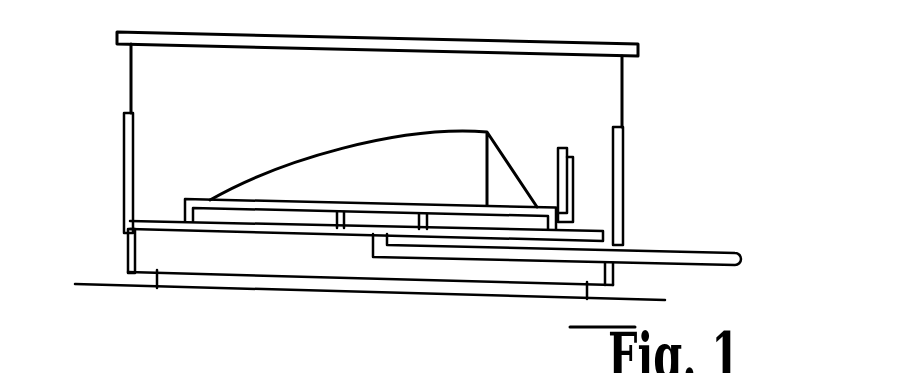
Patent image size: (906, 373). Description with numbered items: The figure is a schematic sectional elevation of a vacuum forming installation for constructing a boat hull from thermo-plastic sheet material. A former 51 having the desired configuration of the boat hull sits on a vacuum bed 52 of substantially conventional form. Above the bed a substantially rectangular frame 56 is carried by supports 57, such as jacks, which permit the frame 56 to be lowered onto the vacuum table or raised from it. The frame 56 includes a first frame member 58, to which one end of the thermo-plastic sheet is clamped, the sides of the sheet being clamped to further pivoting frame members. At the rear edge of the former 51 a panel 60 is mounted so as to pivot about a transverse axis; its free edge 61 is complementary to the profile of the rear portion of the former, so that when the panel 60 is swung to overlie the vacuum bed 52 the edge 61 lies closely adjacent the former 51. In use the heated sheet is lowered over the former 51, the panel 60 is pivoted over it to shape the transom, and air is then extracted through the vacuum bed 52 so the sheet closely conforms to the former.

The former 51 is at (338, 147).
The vacuum bed 52 is at (233, 213).
The frame 56 is at (597, 56).
The supports 57 is at (124, 160).
The first frame member 58 is at (408, 297).
The panel 60 is at (574, 176).
The edge 61 is at (567, 150).